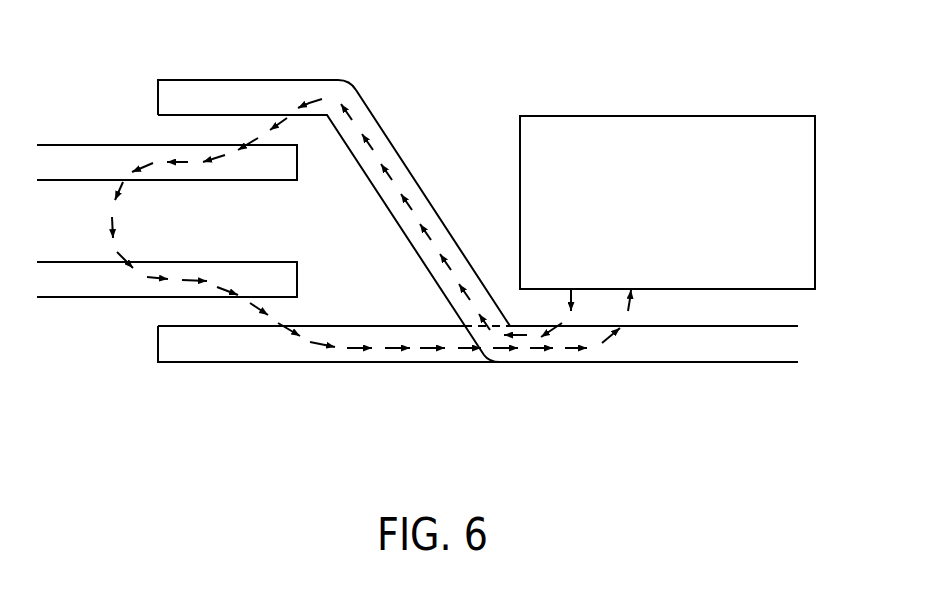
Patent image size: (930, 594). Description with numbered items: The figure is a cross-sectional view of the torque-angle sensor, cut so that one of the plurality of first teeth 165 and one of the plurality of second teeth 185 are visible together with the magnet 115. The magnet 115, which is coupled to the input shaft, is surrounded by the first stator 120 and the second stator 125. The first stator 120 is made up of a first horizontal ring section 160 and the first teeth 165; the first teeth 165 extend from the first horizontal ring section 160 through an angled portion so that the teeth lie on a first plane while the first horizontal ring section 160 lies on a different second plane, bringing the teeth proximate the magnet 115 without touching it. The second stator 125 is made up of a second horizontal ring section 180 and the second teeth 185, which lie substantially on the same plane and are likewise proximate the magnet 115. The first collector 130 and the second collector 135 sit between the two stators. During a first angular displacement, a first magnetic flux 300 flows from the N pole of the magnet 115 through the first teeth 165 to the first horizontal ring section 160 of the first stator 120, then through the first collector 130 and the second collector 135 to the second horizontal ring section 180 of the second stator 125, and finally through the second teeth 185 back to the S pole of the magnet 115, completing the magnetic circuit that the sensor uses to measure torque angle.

The magnet 115 is at (688, 219).
The first stator 120 is at (188, 78).
The second stator 125 is at (207, 366).
The first collector 130 is at (92, 145).
The second collector 135 is at (83, 298).
The first horizontal ring section 160 is at (313, 79).
The first teeth 165 is at (445, 297).
The second horizontal ring section 180 is at (354, 363).
The second teeth 185 is at (452, 364).
The first magnetic flux 300 is at (110, 218).